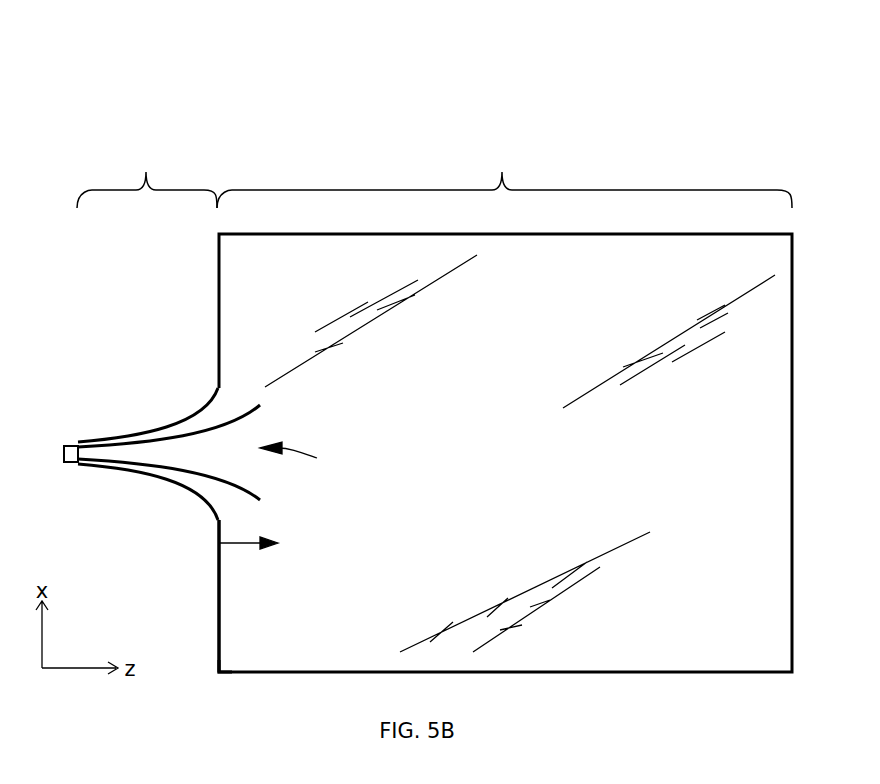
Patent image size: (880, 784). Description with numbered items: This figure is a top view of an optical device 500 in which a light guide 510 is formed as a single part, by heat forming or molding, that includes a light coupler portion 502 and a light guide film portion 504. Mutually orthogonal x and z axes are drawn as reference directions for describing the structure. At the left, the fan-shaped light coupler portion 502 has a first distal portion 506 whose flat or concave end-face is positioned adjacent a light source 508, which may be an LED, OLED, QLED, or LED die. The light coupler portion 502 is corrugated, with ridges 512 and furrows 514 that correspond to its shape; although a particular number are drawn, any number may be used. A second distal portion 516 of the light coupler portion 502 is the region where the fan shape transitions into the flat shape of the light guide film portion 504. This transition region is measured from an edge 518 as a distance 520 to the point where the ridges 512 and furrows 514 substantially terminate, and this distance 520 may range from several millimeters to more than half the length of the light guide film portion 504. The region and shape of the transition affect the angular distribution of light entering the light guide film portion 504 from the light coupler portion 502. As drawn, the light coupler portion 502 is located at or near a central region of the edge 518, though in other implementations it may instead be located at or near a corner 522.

The optical device 500 is at (699, 88).
The light coupler portion 502 is at (147, 177).
The light guide film portion 504 is at (504, 409).
The first distal portion 506 is at (77, 463).
The light source 508 is at (72, 443).
The light guide 510 is at (520, 453).
The ridges 512 is at (145, 443).
The furrows 514 is at (210, 453).
The second distal portion 516 is at (309, 459).
The edge 518 is at (218, 530).
The distance 520 is at (245, 545).
The corner 522 is at (218, 668).